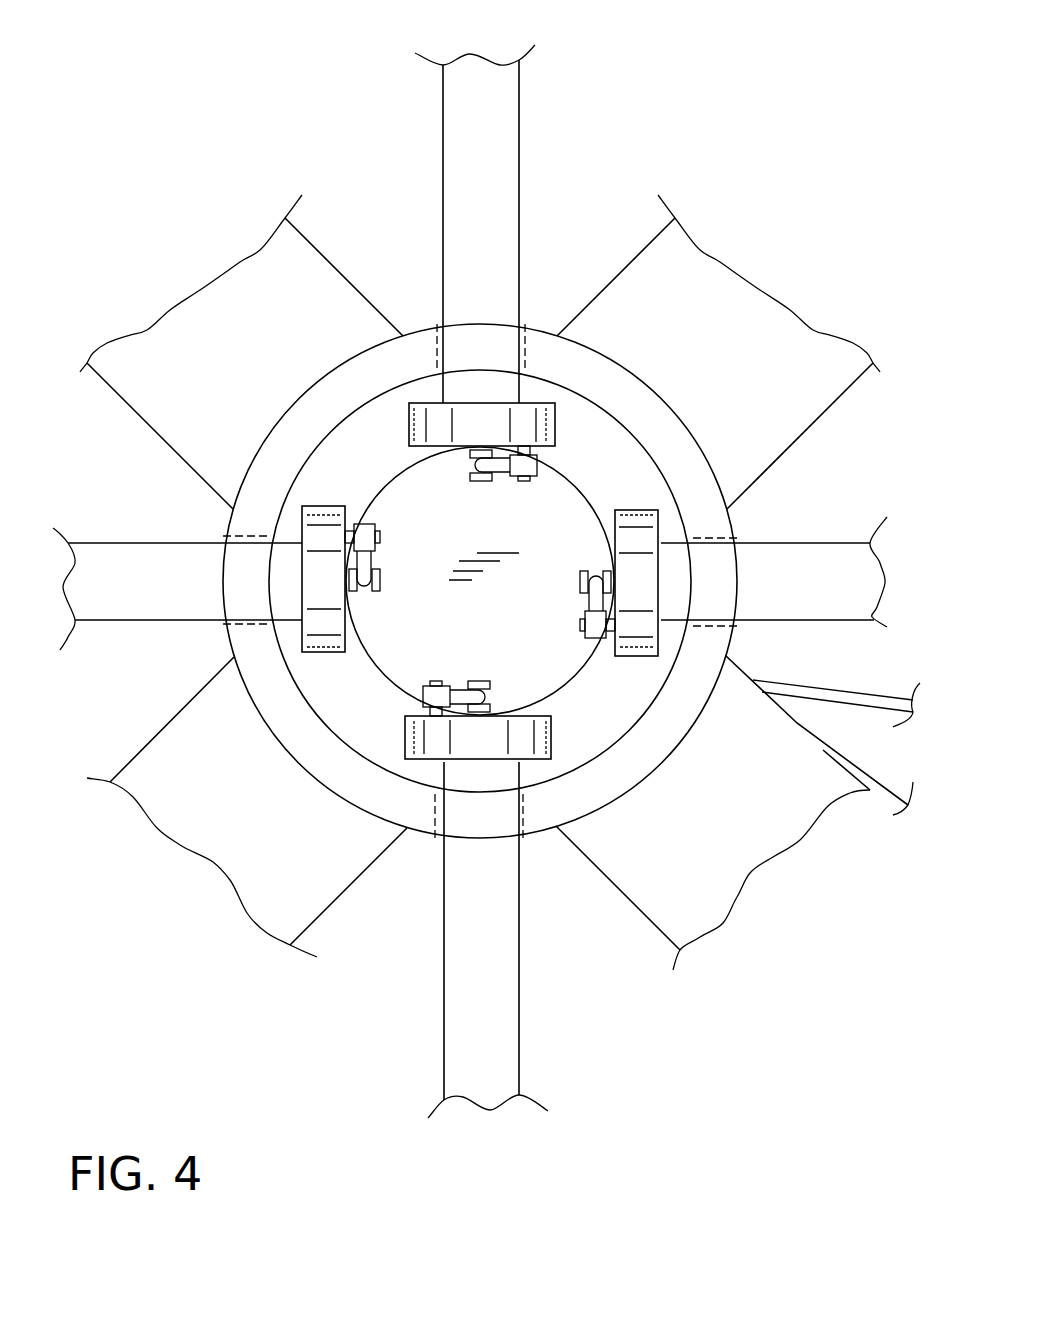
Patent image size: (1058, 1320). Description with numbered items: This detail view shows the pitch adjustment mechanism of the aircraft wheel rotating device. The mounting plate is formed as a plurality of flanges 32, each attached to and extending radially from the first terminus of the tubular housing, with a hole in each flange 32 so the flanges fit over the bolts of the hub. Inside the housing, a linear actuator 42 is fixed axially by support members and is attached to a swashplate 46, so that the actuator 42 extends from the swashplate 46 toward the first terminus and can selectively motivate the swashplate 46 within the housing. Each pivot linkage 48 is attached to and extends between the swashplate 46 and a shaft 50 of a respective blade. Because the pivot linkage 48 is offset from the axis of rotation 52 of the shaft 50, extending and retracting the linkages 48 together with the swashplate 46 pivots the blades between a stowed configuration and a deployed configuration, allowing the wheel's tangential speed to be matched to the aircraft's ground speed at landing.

The flange 32 is at (750, 711).
The linear actuator 42 is at (528, 538).
The swashplate 46 is at (415, 514).
The pivot linkage 48 is at (572, 604).
The shaft 50 is at (860, 578).
The axis of rotation 52 is at (104, 578).